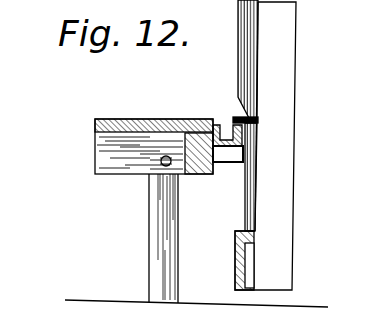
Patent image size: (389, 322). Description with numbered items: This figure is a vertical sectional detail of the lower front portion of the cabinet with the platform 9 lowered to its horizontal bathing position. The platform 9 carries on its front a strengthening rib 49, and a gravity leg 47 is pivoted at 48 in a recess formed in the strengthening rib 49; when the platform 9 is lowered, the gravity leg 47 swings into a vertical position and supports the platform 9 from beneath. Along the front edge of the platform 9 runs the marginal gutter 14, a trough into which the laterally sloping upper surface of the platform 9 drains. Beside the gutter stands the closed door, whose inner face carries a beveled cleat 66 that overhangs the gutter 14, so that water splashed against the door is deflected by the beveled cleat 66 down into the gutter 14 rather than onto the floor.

The platform 9 is at (169, 121).
The marginal gutter 14 is at (224, 136).
The beveled cleat 66 is at (247, 108).
The strengthening ribs 49 is at (93, 153).
The pivot 48 is at (161, 165).
The gravity legs 47 is at (157, 229).